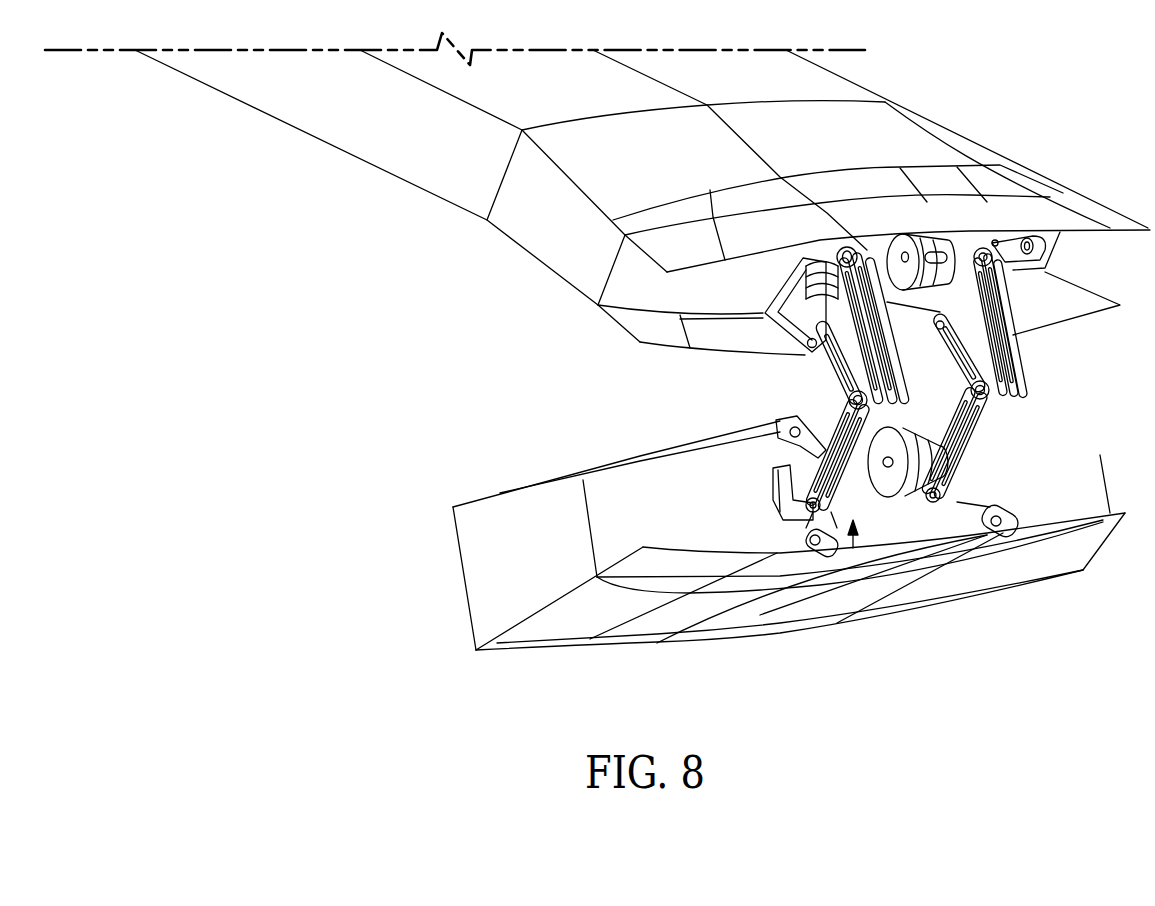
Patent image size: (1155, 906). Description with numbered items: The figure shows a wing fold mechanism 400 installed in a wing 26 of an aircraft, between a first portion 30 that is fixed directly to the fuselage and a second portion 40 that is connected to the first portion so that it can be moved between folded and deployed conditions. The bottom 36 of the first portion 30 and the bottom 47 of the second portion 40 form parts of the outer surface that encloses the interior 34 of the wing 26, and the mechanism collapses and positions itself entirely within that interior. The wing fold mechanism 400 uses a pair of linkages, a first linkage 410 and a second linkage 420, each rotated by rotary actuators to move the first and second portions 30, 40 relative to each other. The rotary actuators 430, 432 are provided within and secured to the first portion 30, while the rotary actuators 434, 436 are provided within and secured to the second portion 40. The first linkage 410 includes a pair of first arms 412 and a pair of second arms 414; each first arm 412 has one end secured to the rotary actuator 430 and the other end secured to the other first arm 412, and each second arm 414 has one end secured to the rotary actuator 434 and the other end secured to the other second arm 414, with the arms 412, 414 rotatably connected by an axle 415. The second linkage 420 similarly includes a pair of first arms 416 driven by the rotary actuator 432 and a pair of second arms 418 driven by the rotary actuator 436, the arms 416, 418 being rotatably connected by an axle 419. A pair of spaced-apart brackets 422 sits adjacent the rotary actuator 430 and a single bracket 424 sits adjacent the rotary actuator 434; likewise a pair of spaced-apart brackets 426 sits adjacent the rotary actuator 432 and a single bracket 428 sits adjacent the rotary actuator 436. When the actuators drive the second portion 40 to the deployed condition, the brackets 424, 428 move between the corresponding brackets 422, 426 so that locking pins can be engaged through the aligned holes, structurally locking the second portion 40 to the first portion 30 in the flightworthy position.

The wing 26 is at (527, 672).
The first portion 30 is at (468, 582).
The interior 34 is at (1077, 252).
The bottom 36 is at (1053, 565).
The second portion 40 is at (372, 163).
The bottom 47 is at (652, 167).
The wing fold mechanism 400 is at (1063, 363).
The first linkage 410 is at (852, 552).
The first arm 412 is at (789, 470).
The second arm 414 is at (866, 245).
The axle 415 is at (851, 400).
The first arm 416 is at (962, 452).
The second arm 418 is at (975, 255).
The axle 419 is at (973, 390).
The second linkage 420 is at (994, 488).
The brackets 422 is at (812, 548).
The bracket 424 is at (793, 322).
The brackets 426 is at (997, 532).
The bracket 428 is at (1028, 238).
The rotary actuator 430 is at (787, 431).
The rotary actuator 432 is at (888, 468).
The rotary actuator 434 is at (803, 288).
The rotary actuator 436 is at (903, 252).